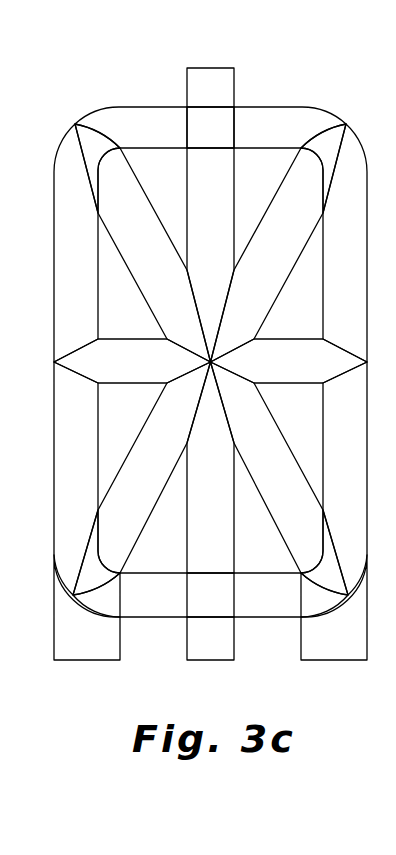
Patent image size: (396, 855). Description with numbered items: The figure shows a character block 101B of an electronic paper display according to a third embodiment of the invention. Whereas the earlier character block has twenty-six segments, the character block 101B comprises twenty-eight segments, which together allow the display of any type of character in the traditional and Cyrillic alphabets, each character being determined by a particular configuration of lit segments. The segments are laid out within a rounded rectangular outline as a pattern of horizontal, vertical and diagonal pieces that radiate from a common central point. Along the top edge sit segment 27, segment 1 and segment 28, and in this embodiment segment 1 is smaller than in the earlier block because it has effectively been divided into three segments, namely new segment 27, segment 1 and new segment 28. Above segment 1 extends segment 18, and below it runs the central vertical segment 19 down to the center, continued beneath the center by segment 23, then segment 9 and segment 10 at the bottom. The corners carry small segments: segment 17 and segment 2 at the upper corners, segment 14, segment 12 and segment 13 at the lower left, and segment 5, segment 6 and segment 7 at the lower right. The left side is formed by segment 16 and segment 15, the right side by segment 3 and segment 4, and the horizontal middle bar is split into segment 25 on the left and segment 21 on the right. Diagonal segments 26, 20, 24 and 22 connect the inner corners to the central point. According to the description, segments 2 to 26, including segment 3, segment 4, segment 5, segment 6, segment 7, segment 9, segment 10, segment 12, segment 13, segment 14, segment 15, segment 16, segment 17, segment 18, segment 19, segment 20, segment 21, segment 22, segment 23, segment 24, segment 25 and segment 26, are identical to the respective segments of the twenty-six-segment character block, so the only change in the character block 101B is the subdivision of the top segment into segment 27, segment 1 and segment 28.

The character block 101B is at (143, 91).
The segment 1 is at (210, 127).
The segment 2 is at (323, 168).
The segment 3 is at (345, 243).
The segment 4 is at (345, 478).
The segment 5 is at (324, 552).
The segment 6 is at (324, 595).
The segment 7 is at (334, 607).
The segment 9 is at (210, 595).
The segment 10 is at (210, 638).
The segment 12 is at (96, 595).
The segment 13 is at (87, 607).
The segment 14 is at (96, 552).
The segment 15 is at (76, 478).
The segment 16 is at (76, 243).
The segment 17 is at (97, 168).
The segment 18 is at (210, 87).
The segment 19 is at (210, 255).
The segment 20 is at (267, 255).
The segment 21 is at (289, 361).
The segment 22 is at (267, 467).
The segment 23 is at (210, 467).
The segment 24 is at (154, 467).
The segment 25 is at (132, 361).
The segment 26 is at (154, 255).
The new segment 27 is at (131, 127).
The new segment 28 is at (290, 127).